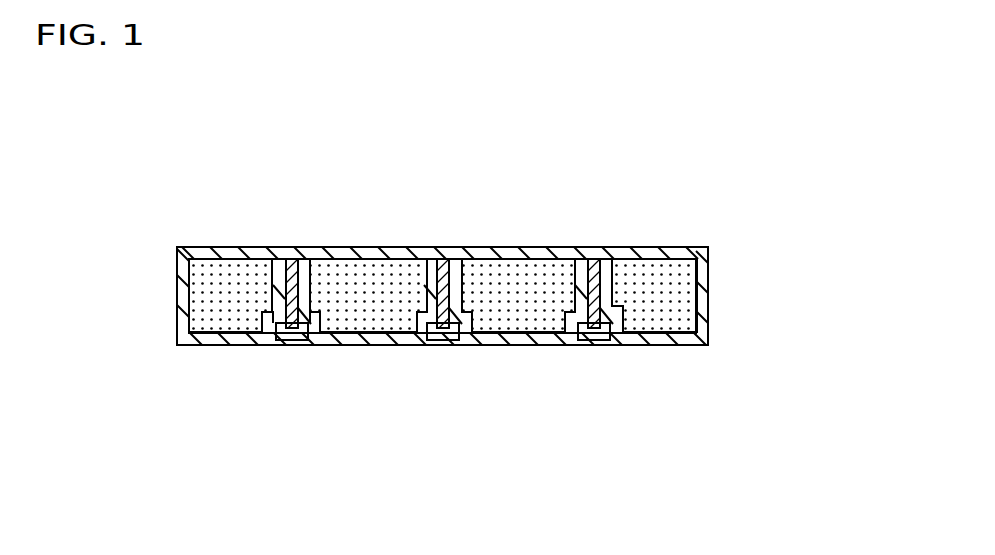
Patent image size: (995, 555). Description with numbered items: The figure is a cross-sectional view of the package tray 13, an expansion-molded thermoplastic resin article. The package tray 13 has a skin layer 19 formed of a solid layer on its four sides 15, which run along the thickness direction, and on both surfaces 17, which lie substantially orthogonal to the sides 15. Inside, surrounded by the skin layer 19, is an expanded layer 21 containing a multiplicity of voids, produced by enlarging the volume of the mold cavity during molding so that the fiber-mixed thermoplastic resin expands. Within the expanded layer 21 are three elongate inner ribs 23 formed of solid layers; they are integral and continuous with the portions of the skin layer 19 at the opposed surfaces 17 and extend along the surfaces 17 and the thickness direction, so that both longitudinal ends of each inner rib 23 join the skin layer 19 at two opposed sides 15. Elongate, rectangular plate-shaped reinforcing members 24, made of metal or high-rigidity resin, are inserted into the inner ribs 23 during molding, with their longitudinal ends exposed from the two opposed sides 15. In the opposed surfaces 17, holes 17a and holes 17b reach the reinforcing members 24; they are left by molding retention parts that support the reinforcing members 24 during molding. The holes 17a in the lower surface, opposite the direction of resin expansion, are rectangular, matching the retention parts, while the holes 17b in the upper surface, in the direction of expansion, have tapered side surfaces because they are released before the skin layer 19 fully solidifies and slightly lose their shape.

The package tray 13 is at (447, 149).
The sides 15 is at (706, 300).
The surfaces 17 is at (529, 256).
The holes 17a is at (290, 342).
The holes 17b is at (283, 262).
The skin layer 19 is at (487, 253).
The expanded layer 21 is at (230, 278).
The inner ribs 23 is at (312, 295).
The reinforcing members 24 is at (275, 288).